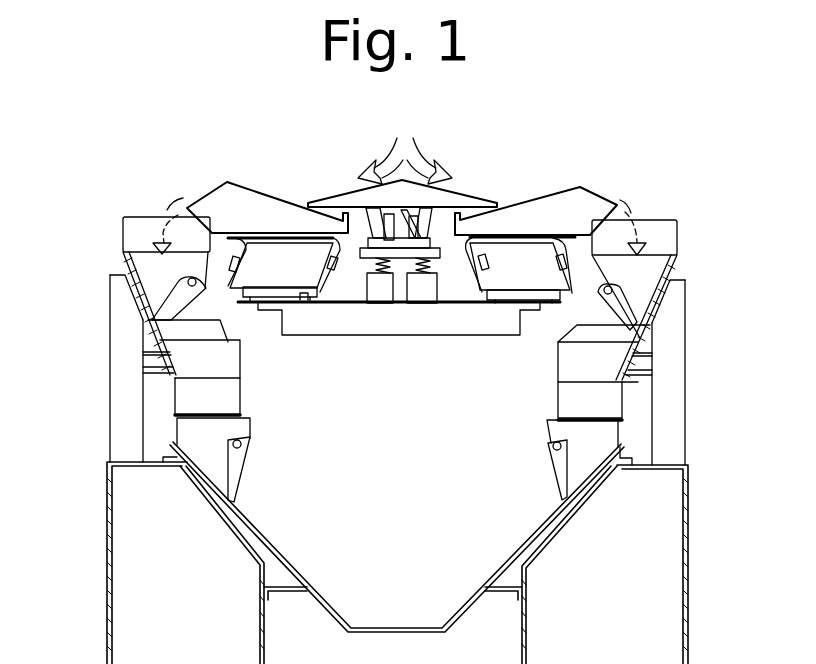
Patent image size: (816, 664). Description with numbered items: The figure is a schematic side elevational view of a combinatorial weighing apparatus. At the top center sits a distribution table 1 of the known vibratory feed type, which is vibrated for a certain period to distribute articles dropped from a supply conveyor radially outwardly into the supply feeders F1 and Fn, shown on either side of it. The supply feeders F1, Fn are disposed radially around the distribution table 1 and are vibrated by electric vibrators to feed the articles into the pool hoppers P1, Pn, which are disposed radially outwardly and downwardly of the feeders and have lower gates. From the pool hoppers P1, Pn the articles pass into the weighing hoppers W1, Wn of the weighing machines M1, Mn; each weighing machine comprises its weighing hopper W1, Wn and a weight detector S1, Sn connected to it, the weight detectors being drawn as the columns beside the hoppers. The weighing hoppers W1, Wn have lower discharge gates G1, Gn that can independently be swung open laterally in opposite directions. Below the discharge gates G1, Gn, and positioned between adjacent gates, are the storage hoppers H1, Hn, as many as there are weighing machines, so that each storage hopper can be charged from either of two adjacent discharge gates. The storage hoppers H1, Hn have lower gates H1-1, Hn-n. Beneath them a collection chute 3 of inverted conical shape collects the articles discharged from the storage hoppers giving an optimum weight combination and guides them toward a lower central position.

The distribution table 1 is at (452, 197).
The collection chute 3 is at (403, 478).
The supply feeder F1 is at (243, 200).
The supply feeder Fn is at (555, 203).
The pool hopper P1 is at (123, 238).
The pool hopper Pn is at (665, 240).
The weighing machine M1 is at (98, 342).
The weighing machine Mn is at (702, 344).
The weight detector S1 is at (127, 362).
The weight detector Sn is at (665, 378).
The weighing hopper W1 is at (223, 365).
The weighing hopper Wn is at (568, 360).
The discharge gate G1 is at (227, 407).
The discharge gate Gn is at (568, 398).
The storage hopper H1 is at (238, 430).
The storage hopper Hn is at (553, 432).
The lower gate H1-1 is at (240, 472).
The lower gate Hn-n is at (552, 480).